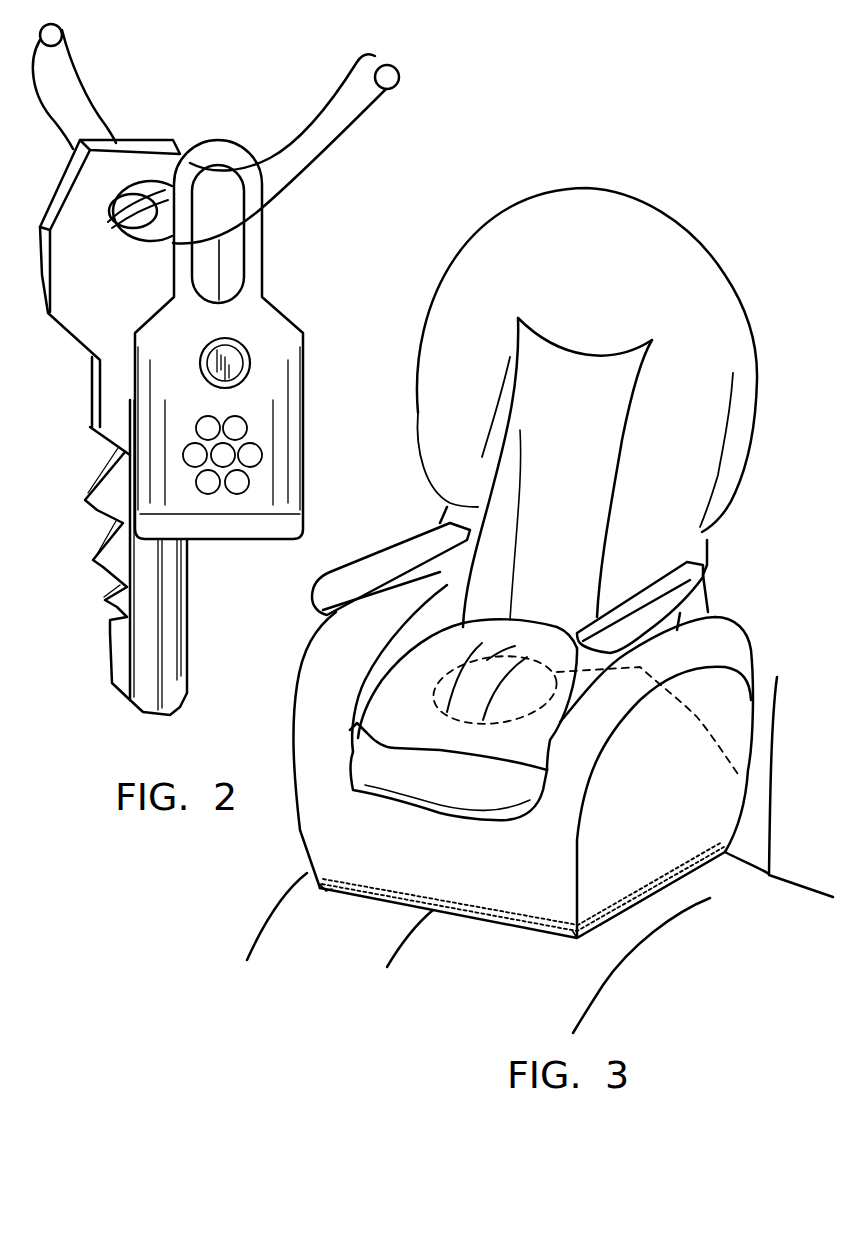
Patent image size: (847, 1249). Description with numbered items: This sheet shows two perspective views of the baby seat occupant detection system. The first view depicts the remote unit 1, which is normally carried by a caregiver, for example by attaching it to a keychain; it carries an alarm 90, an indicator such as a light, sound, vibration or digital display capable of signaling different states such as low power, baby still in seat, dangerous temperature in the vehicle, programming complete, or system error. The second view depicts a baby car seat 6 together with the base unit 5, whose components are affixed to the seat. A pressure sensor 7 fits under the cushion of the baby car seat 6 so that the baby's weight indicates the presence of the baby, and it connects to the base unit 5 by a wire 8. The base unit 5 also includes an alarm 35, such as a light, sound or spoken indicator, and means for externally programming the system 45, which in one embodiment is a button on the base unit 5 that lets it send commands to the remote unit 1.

In FIG. 2, the remote unit 1 is at (303, 333).
In FIG. 2, the alarm 90 is at (232, 368).
In FIG. 3, the baby car seat 6 is at (592, 245).
In FIG. 3, the pressure sensor 7 is at (430, 709).
In FIG. 3, the wire 8 is at (747, 790).
In FIG. 3, the base unit 5 is at (684, 877).
In FIG. 3, the means for externally programming the baby seat occupant detection system 45 is at (570, 932).
In FIG. 3, the alarm 35 is at (323, 887).